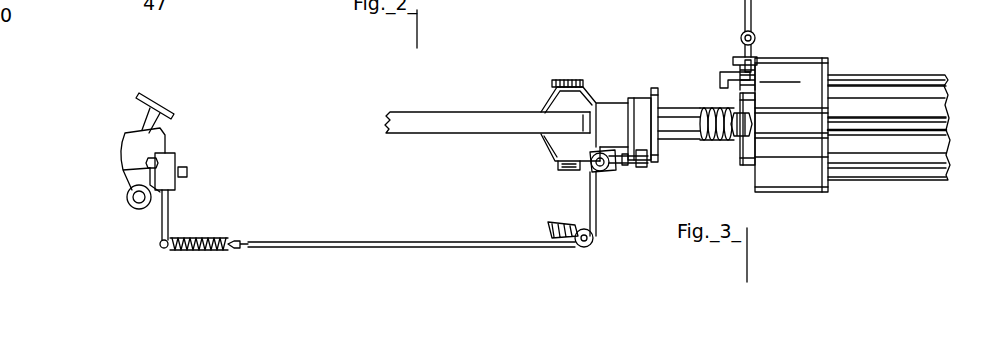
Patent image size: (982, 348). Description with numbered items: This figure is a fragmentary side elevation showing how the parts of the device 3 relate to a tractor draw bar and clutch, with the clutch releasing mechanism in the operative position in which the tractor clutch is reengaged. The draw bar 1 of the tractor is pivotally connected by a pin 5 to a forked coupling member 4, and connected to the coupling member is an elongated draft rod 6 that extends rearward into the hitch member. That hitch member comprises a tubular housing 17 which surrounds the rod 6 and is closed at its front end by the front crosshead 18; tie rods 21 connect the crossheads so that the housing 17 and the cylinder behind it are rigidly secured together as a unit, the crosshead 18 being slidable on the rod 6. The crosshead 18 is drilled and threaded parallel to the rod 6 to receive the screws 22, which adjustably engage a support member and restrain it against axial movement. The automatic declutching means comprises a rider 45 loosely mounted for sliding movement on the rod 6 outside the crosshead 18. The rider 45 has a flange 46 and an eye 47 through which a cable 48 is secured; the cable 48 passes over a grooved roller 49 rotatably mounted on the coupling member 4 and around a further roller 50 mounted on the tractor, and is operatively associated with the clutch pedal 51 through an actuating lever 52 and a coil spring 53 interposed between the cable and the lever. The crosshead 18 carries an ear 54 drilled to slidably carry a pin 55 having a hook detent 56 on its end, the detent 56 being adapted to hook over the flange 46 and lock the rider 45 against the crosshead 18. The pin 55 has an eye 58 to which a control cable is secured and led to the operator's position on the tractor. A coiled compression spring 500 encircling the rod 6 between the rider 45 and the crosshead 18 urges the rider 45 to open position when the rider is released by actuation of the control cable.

The draw bar 1 is at (478, 122).
The device 3 is at (887, 75).
The forked coupling member 4 is at (554, 100).
The pin 5 is at (574, 80).
The draft rod 6 is at (680, 116).
The tubular housing 17 is at (925, 86).
The front crosshead 18 is at (801, 62).
The tie rods 21 is at (852, 122).
The screws 22 is at (724, 144).
The rider 45 is at (634, 105).
The flange 46 is at (654, 88).
The eye 47 is at (646, 167).
The cable 48 is at (596, 200).
The grooved roller 49 is at (598, 170).
The roller 50 is at (585, 248).
The clutch pedal 51 is at (153, 106).
The actuating lever 52 is at (168, 213).
The coil spring 53 is at (212, 252).
The ear 54 is at (738, 58).
The pin 55 is at (753, 62).
The hook detent 56 is at (726, 78).
The eye 58 is at (757, 36).
The coiled compression spring 500 is at (708, 142).